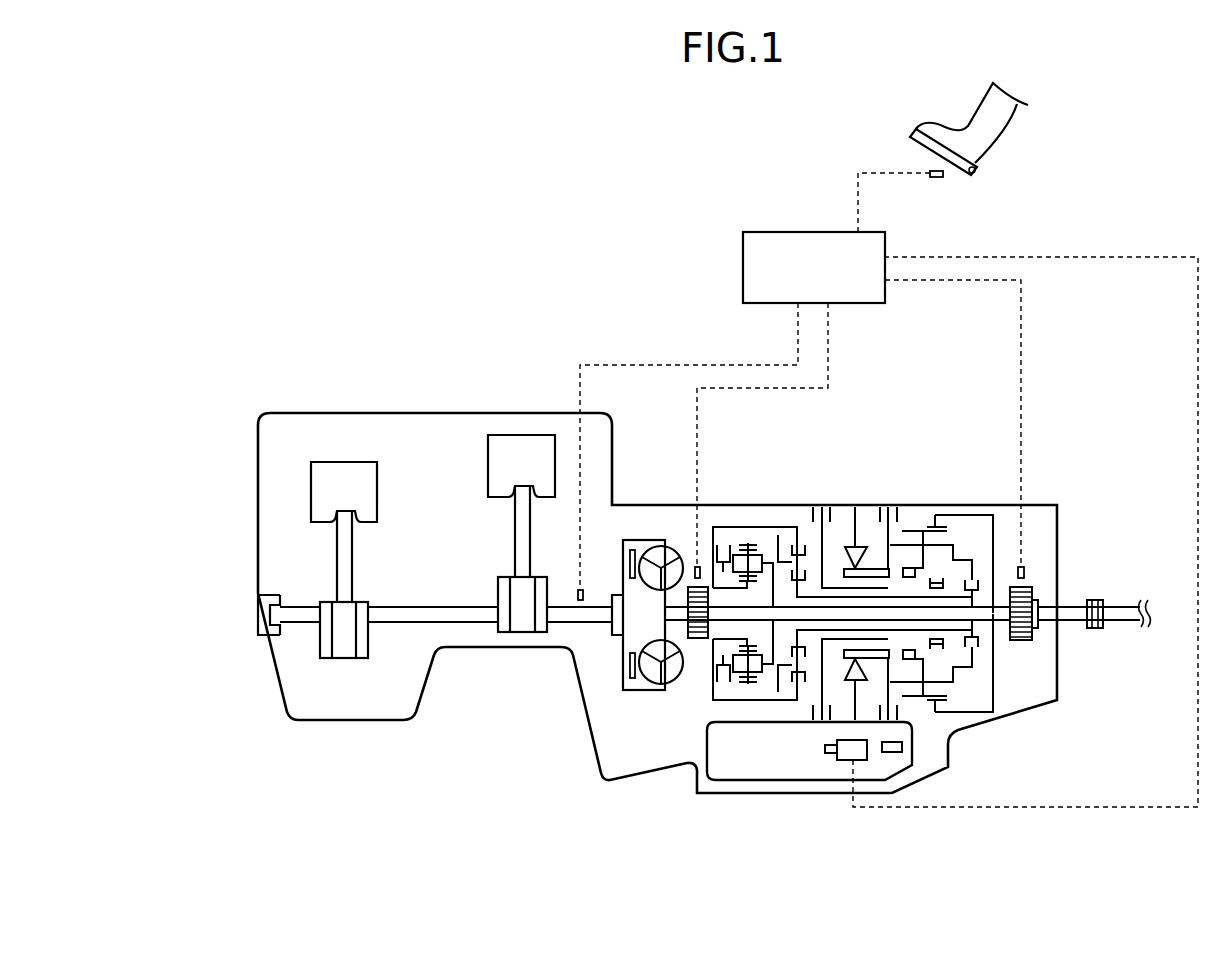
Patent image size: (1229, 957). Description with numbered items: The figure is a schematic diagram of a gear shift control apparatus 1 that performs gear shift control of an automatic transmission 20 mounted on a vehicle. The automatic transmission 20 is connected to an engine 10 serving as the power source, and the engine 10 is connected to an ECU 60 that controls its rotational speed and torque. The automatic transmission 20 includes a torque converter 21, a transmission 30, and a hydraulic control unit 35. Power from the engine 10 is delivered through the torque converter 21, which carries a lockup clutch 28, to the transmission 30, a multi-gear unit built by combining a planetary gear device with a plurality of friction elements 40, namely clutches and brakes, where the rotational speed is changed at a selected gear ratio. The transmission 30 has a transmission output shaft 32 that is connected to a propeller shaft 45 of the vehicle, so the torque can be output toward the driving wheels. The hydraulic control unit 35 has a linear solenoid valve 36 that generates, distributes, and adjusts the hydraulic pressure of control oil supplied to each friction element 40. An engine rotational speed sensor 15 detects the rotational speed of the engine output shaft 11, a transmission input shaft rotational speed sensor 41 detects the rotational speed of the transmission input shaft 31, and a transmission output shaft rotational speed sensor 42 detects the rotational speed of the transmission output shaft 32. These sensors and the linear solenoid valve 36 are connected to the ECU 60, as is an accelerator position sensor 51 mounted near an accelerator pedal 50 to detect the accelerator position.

The gear shift control apparatus 1 is at (1112, 231).
The engine 10 is at (257, 534).
The engine output shaft 11 is at (562, 624).
The engine rotational speed sensor 15 is at (578, 588).
The automatic transmission 20 is at (660, 788).
The torque converter 21 is at (656, 698).
The lockup clutch 28 is at (622, 548).
The transmission 30 is at (858, 569).
The transmission input shaft 31 is at (612, 628).
The transmission output shaft 32 is at (1072, 622).
The hydraulic control unit 35 is at (770, 770).
The linear solenoid valve 36 is at (843, 762).
The friction elements 40 is at (718, 517).
The transmission input shaft rotational speed sensor 41 is at (695, 565).
The transmission output shaft rotational speed sensor 42 is at (1025, 572).
The propeller shaft 45 is at (1121, 622).
The accelerator pedal 50 is at (914, 133).
The accelerator position sensor 51 is at (939, 180).
The ECU 60 is at (827, 232).